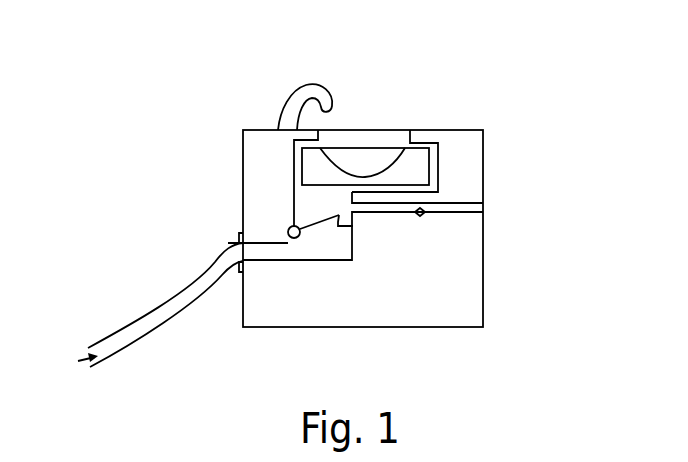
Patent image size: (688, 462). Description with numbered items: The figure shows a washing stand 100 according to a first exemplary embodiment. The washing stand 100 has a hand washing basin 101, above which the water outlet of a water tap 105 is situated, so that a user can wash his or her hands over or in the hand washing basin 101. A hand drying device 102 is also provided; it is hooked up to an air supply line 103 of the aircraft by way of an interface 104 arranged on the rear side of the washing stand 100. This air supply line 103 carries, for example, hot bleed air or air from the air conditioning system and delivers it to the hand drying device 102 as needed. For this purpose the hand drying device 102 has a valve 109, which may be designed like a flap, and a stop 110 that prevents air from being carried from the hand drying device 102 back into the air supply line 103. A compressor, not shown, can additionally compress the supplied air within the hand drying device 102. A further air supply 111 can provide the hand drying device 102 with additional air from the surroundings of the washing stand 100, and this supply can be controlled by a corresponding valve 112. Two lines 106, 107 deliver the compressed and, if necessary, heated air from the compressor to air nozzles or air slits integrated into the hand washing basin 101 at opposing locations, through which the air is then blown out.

The washing stand 100 is at (519, 237).
The hand washing basin 101 is at (372, 148).
The hand drying device 102 is at (308, 203).
The air supply line 103 is at (124, 345).
The interface 104 is at (238, 273).
The water tap 105 is at (296, 108).
The line 106 is at (291, 147).
The line 107 is at (440, 147).
The valve 109 is at (337, 221).
The stop 110 is at (357, 218).
The air supply 111 is at (467, 203).
The valve 112 is at (424, 214).